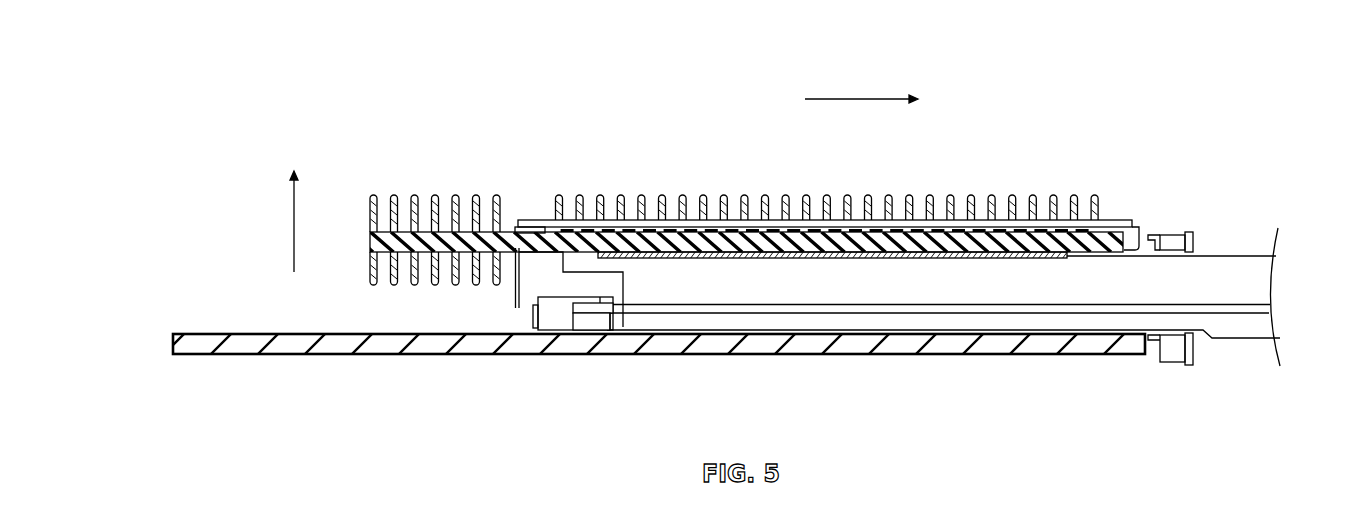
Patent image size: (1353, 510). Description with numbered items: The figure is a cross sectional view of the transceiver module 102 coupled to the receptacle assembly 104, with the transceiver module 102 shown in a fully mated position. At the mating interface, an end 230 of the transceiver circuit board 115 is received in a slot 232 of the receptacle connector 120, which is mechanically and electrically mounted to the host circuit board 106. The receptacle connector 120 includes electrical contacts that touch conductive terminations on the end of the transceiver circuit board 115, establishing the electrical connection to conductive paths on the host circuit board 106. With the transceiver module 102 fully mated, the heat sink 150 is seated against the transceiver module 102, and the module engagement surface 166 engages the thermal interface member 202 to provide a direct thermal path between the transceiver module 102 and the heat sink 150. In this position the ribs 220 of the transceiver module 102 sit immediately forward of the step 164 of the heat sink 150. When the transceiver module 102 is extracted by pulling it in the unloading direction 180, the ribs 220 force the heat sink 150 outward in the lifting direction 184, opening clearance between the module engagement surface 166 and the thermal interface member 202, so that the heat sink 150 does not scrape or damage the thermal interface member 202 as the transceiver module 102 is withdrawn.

The transceiver module 102 is at (817, 275).
The receptacle assembly 104 is at (1175, 225).
The host circuit board 106 is at (418, 345).
The transceiver circuit board 115 is at (598, 318).
The receptacle connector 120 is at (543, 329).
The heat sink 150 is at (688, 238).
The step 164 is at (895, 262).
The module engagement surface 166 is at (957, 270).
The unloading direction 180 is at (856, 99).
The lifting direction 184 is at (294, 226).
The thermal interface member 202 is at (858, 258).
The ribs 220 is at (580, 249).
The end 230 is at (584, 312).
The slot 232 is at (573, 316).